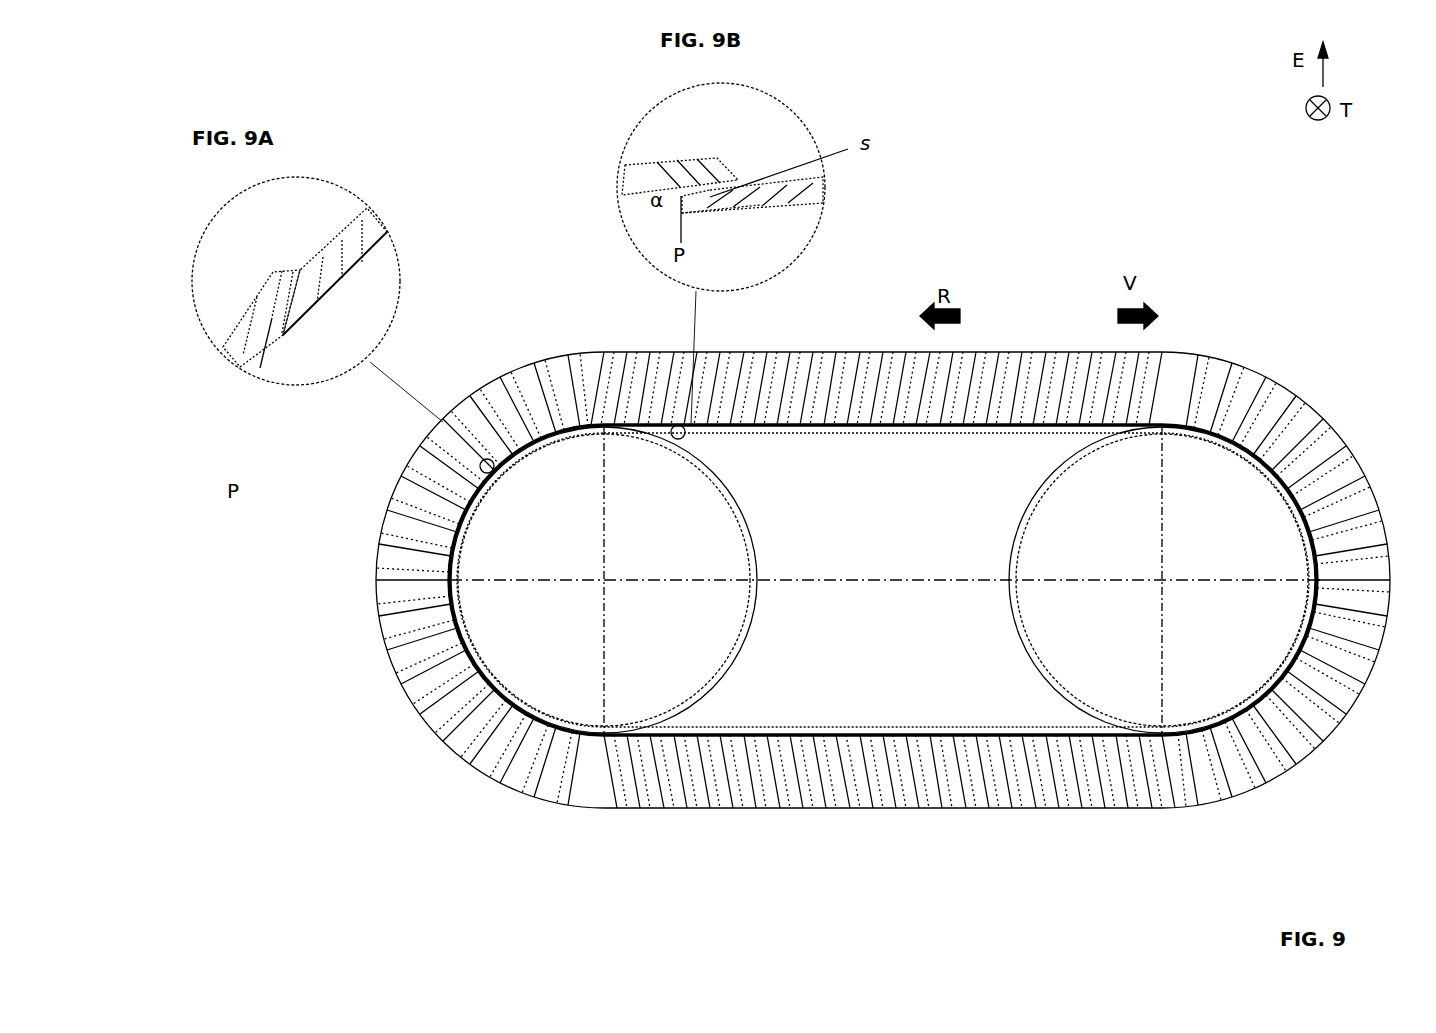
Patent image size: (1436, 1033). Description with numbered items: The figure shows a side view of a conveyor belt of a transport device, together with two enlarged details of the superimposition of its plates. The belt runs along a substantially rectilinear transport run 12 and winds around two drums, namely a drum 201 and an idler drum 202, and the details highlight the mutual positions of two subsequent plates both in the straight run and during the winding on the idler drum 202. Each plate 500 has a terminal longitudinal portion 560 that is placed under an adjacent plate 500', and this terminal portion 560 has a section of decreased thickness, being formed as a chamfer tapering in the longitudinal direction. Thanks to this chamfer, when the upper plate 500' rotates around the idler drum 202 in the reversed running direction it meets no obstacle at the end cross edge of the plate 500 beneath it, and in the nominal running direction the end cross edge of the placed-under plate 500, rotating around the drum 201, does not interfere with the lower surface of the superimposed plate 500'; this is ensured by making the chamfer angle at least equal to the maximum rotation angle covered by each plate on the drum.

In FIG. 9, the rectilinear transport run 12 is at (1013, 325).
In FIG. 9, the drum 201 is at (1123, 535).
In FIG. 9, the idler drum 202 is at (661, 535).
In FIG. 9A, the plate 500 is at (401, 271).
In FIG. 9B, the plate 500 is at (805, 210).
In FIG. 9A, the adjacent plate 500' is at (205, 302).
In FIG. 9B, the adjacent plate 500' is at (627, 139).
In FIG. 9B, the terminal longitudinal portion 560 is at (698, 210).